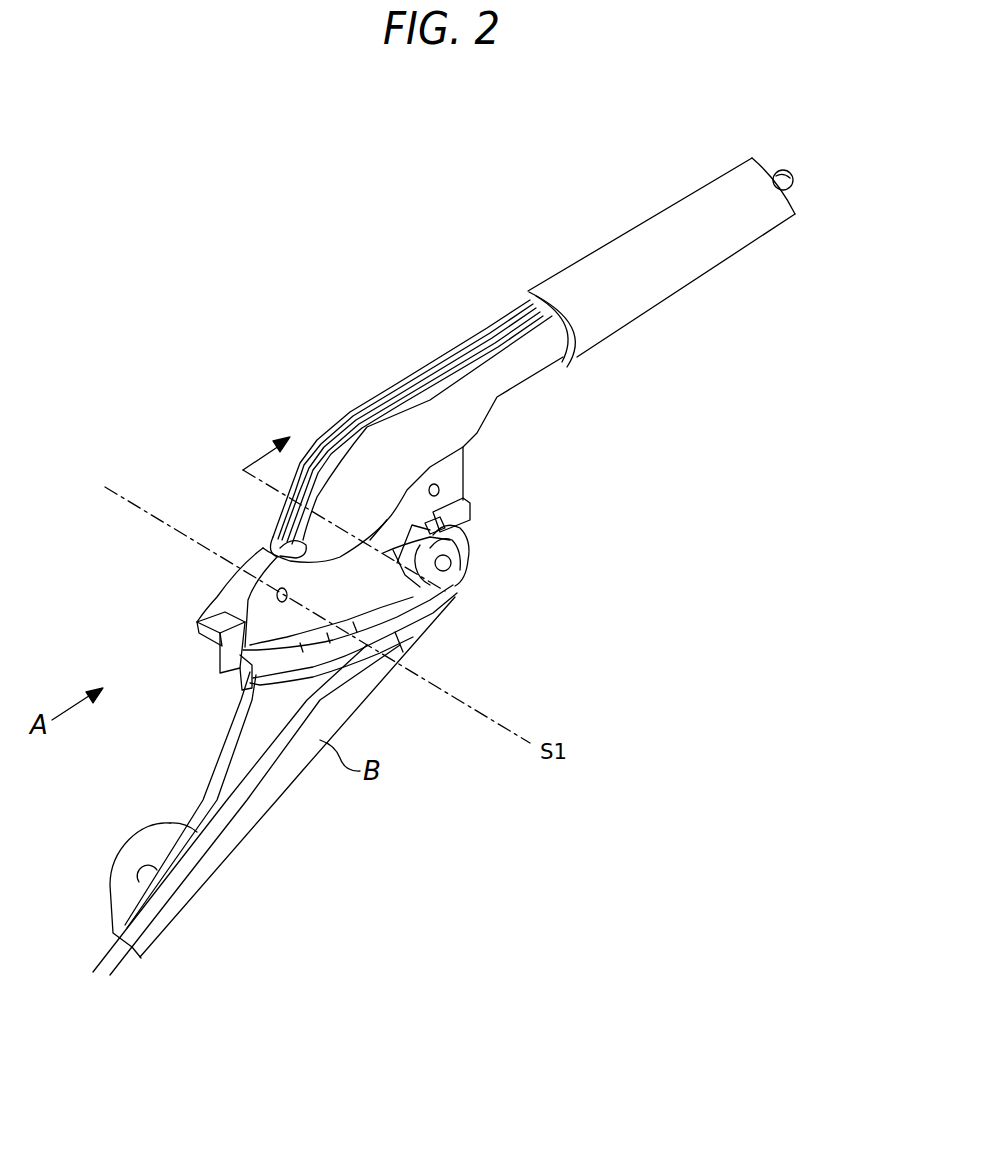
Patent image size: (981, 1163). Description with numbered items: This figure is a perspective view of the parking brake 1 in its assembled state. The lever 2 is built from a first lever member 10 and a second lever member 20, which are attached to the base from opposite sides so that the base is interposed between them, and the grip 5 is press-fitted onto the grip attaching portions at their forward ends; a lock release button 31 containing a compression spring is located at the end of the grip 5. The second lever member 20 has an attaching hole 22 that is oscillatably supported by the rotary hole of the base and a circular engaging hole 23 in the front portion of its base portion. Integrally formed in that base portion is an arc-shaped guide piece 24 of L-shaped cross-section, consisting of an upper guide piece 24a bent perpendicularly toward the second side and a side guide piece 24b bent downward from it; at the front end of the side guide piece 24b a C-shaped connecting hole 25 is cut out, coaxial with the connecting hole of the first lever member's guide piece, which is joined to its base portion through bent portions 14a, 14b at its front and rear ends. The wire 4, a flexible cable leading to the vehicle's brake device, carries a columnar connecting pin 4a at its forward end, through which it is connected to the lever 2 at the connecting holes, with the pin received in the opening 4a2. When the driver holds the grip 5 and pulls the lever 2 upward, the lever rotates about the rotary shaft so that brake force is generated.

The parking brake 1 is at (196, 220).
The lever 2 is at (478, 270).
The wire 4 is at (228, 822).
The connecting pin 4a is at (468, 520).
The pivot hole 4a2 is at (449, 565).
The grip 5 is at (707, 272).
The first lever member 10 is at (410, 375).
The bent portion 14a is at (467, 497).
The bent portion 14b is at (198, 632).
The second lever member 20 is at (468, 355).
The attaching hole 22 is at (257, 553).
The engaging hole 23 is at (441, 487).
The guide piece 24 is at (445, 595).
The upper guide piece 24a is at (222, 672).
The side guide piece 24b is at (407, 640).
The connecting hole 25 is at (458, 548).
The lock release button 31 is at (793, 172).